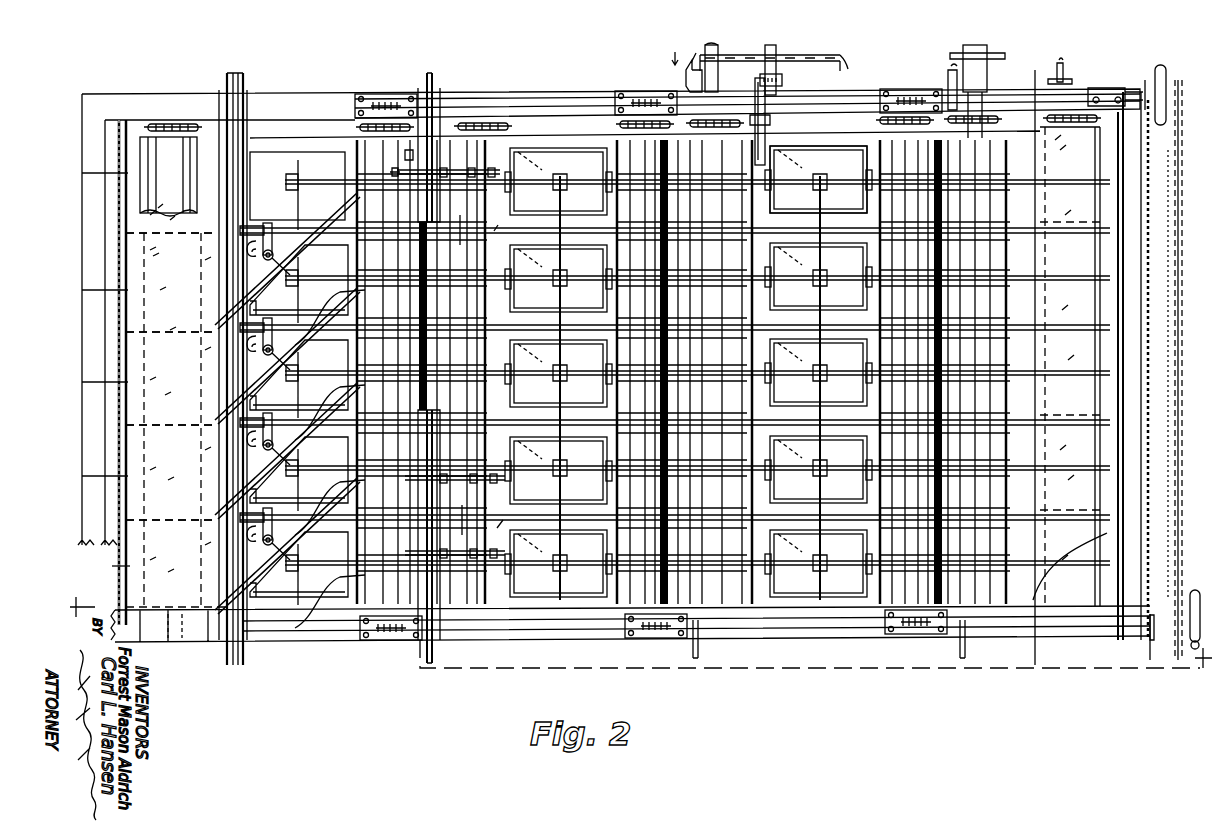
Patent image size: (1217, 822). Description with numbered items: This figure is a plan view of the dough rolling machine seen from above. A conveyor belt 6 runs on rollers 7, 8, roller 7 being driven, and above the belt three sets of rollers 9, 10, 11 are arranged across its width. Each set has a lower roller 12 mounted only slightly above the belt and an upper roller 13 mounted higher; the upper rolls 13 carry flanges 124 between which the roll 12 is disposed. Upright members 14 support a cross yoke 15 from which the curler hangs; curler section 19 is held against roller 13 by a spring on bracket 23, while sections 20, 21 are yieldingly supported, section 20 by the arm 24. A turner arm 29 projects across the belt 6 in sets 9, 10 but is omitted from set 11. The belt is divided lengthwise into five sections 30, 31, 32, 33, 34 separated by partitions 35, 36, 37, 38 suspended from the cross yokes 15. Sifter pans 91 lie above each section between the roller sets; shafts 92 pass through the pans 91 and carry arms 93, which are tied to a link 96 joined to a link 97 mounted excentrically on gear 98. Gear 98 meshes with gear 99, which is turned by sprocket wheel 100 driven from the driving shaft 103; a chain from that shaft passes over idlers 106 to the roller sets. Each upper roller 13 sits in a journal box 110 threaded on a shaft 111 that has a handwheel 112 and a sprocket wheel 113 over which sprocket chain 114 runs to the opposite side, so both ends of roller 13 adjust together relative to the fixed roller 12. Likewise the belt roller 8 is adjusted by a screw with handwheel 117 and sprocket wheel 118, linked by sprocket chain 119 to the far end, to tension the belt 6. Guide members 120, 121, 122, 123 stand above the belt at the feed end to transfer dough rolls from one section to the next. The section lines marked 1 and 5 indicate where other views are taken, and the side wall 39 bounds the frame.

The section line 1 is at (635, 632).
The section line 5 is at (1036, 369).
The conveyor belt 6 is at (190, 560).
The roller 7 is at (170, 176).
The roller 8 is at (1078, 550).
The set of rollers 9 is at (453, 67).
The set of rollers 10 is at (675, 51).
The set of rollers 11 is at (933, 60).
The roller 12 is at (1010, 268).
The roller 13 is at (905, 258).
The upright members 14 is at (765, 57).
The cross yoke 15 is at (418, 206).
The curler section 19 is at (411, 154).
The curler section 20 is at (472, 221).
The curler section 21 is at (499, 232).
The bracket 23 is at (387, 168).
The arm 24 is at (460, 170).
The turner arm 29 is at (550, 189).
The section 30 is at (109, 566).
The section 31 is at (93, 476).
The section 32 is at (93, 382).
The section 33 is at (93, 290).
The section 34 is at (93, 173).
The partition 35 is at (174, 511).
The partition 36 is at (174, 421).
The partition 37 is at (176, 326).
The partition 38 is at (199, 230).
The side wall 39 is at (1130, 300).
The sifter pan 91 is at (576, 145).
The shaft 92 is at (588, 180).
The arm 93 is at (568, 282).
The link 96 is at (300, 450).
The link 97 is at (818, 179).
The gear 98 is at (775, 120).
The gear 99 is at (786, 81).
The sprocket wheel 100 is at (842, 65).
The driving shaft 103 is at (720, 77).
The idler 106 is at (183, 120).
The journal box 110 is at (395, 90).
The shaft 111 is at (551, 96).
The handwheel 112 is at (1161, 64).
The sprocket wheel 113 is at (1142, 68).
The sprocket chain 114 is at (1164, 228).
The handwheel 117 is at (1195, 648).
The sprocket wheel 118 is at (1189, 676).
The sprocket chain 119 is at (1180, 216).
The guide member 120 is at (304, 524).
The guide member 121 is at (331, 428).
The guide member 122 is at (314, 366).
The guide member 123 is at (331, 228).
The flange 124 is at (622, 233).